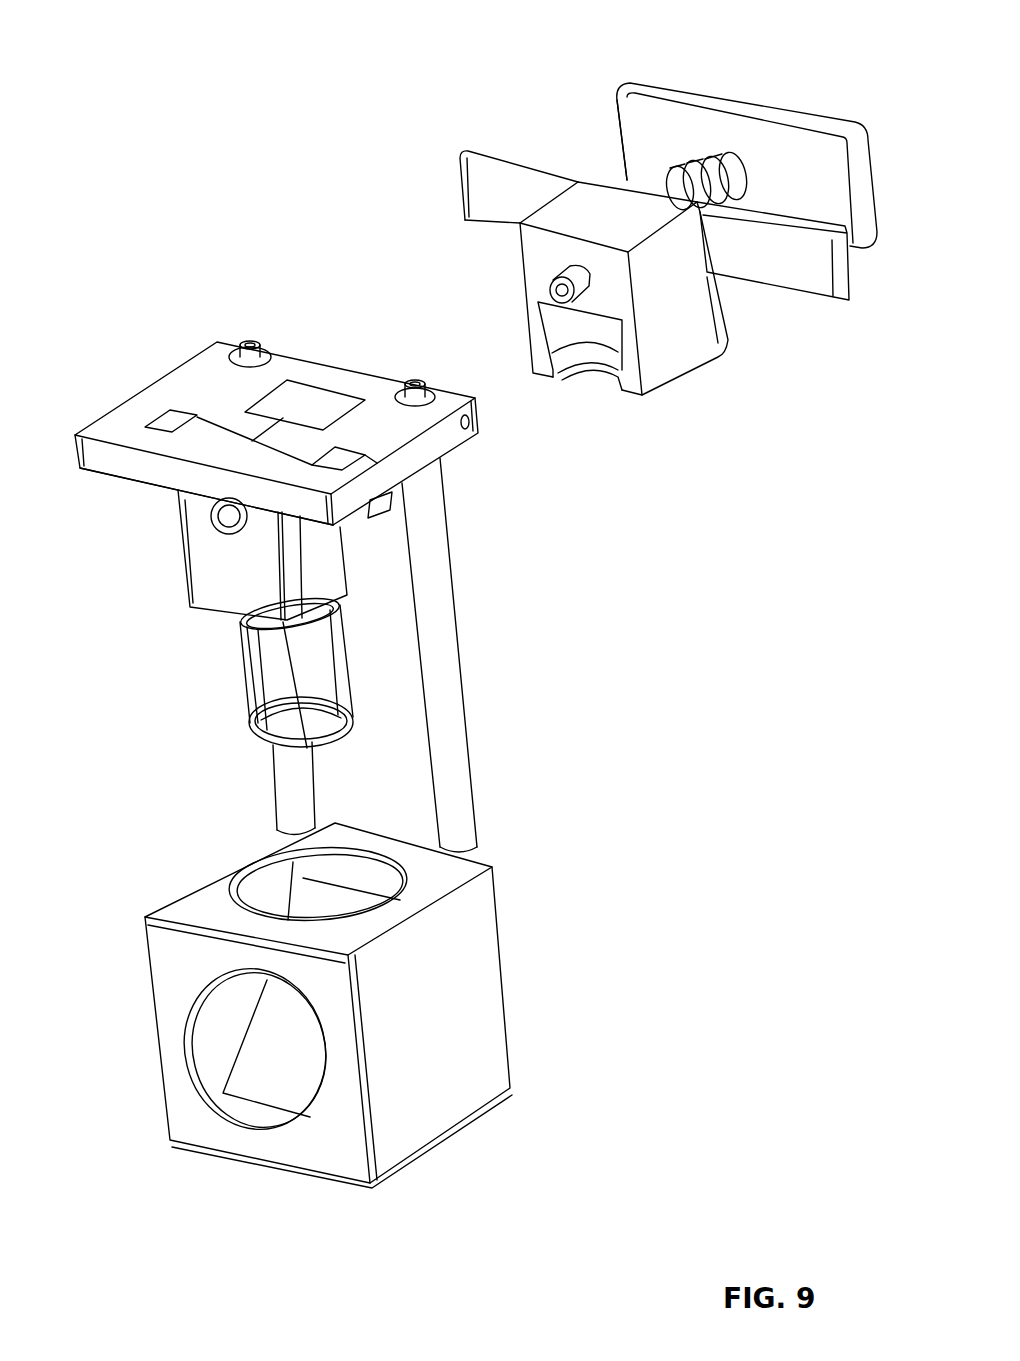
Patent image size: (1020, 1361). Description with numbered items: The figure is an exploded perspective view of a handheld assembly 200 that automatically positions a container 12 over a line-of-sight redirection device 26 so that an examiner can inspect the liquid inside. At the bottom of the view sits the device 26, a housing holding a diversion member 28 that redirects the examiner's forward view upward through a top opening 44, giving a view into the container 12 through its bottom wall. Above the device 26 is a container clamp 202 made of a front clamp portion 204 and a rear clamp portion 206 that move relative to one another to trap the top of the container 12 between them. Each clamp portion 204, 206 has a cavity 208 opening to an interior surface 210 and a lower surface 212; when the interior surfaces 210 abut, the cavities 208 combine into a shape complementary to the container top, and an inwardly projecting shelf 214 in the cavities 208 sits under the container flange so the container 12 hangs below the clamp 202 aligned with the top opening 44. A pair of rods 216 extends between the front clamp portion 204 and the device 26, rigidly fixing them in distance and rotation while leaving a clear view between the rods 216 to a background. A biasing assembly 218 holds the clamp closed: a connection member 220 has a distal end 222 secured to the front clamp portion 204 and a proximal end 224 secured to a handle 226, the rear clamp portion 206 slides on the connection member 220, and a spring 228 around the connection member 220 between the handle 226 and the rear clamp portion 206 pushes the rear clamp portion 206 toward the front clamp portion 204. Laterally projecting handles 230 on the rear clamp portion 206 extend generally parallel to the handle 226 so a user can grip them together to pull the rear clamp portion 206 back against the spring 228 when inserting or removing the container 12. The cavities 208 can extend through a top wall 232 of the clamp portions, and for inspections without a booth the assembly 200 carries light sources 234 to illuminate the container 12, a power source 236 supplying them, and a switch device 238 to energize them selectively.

The handheld assembly 200 is at (138, 60).
The container 12 is at (248, 692).
The line-of-sight redirection device 26 is at (408, 1135).
The diversion member 28 is at (283, 1087).
The top opening 44 is at (257, 865).
The container clamp 202 is at (220, 340).
The front clamp portion 204 is at (95, 430).
The rear clamp portion 206 is at (575, 198).
The cavity 208 is at (592, 382).
The interior surface 210 is at (535, 275).
The lower surface 212 is at (677, 373).
The inwardly projecting shelf 214 is at (563, 363).
The rods 216 is at (285, 785).
The biasing assembly 218 is at (565, 78).
The connection member 220 is at (730, 163).
The distal end 222 is at (540, 300).
The proximal end 224 is at (757, 160).
The handle 226 is at (837, 157).
The spring 228 is at (683, 178).
The laterally projecting handles 230 is at (478, 173).
The top wall 232 is at (142, 447).
The light sources 234 is at (160, 412).
The power source 236 is at (323, 388).
The switch device 238 is at (392, 508).